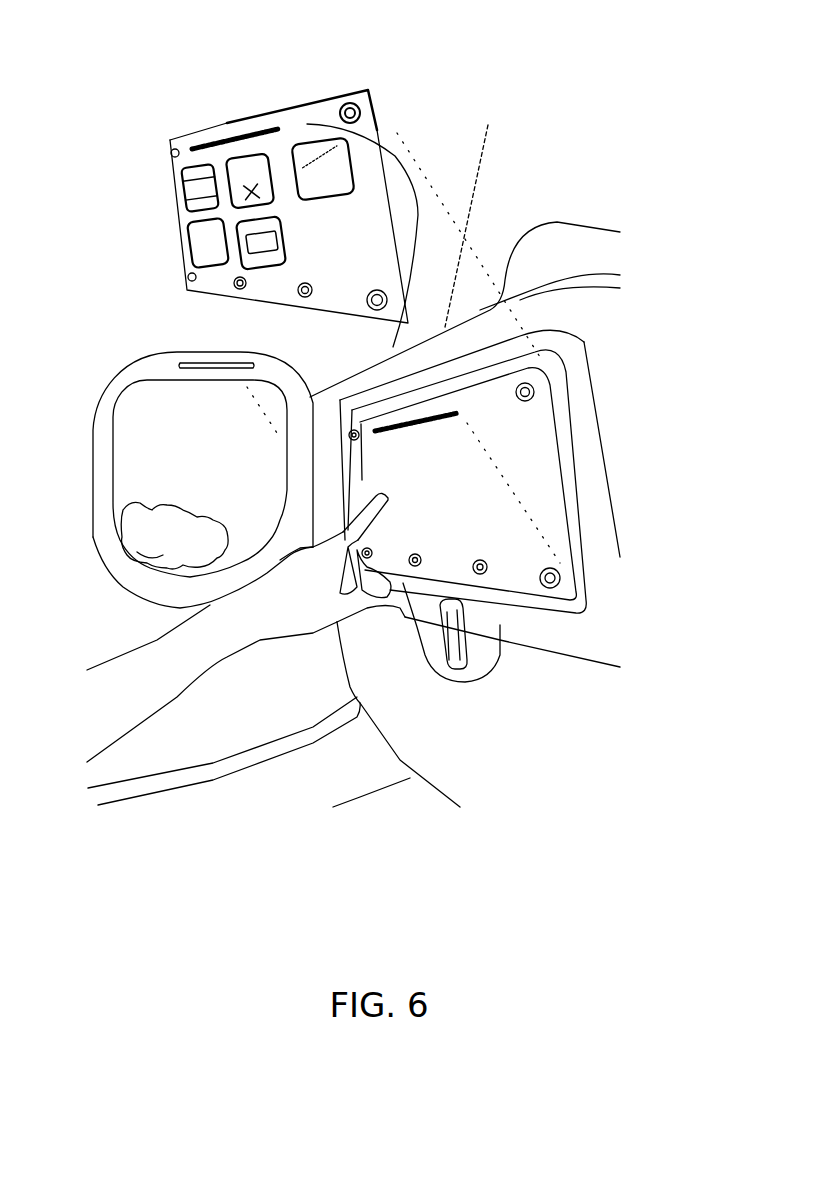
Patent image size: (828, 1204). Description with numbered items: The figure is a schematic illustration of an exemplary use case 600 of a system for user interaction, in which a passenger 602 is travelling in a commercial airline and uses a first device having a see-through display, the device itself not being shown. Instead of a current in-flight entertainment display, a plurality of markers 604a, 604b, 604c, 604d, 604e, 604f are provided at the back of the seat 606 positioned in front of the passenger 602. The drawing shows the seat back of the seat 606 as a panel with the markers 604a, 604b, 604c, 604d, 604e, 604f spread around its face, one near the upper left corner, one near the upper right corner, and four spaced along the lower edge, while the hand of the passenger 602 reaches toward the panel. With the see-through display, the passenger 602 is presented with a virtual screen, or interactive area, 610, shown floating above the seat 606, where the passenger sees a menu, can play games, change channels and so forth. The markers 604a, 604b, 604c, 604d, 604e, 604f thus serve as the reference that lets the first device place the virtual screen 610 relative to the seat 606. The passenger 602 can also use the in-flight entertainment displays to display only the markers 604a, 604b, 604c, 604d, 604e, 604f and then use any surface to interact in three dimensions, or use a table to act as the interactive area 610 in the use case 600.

The use case 600 is at (86, 85).
The virtual screen 610 is at (290, 122).
The seat 606 is at (500, 342).
The marker 604a is at (353, 433).
The marker 604b is at (369, 556).
The marker 604c is at (416, 562).
The marker 604d is at (482, 569).
The marker 604e is at (556, 586).
The marker 604f is at (527, 392).
The passenger 602 is at (160, 677).